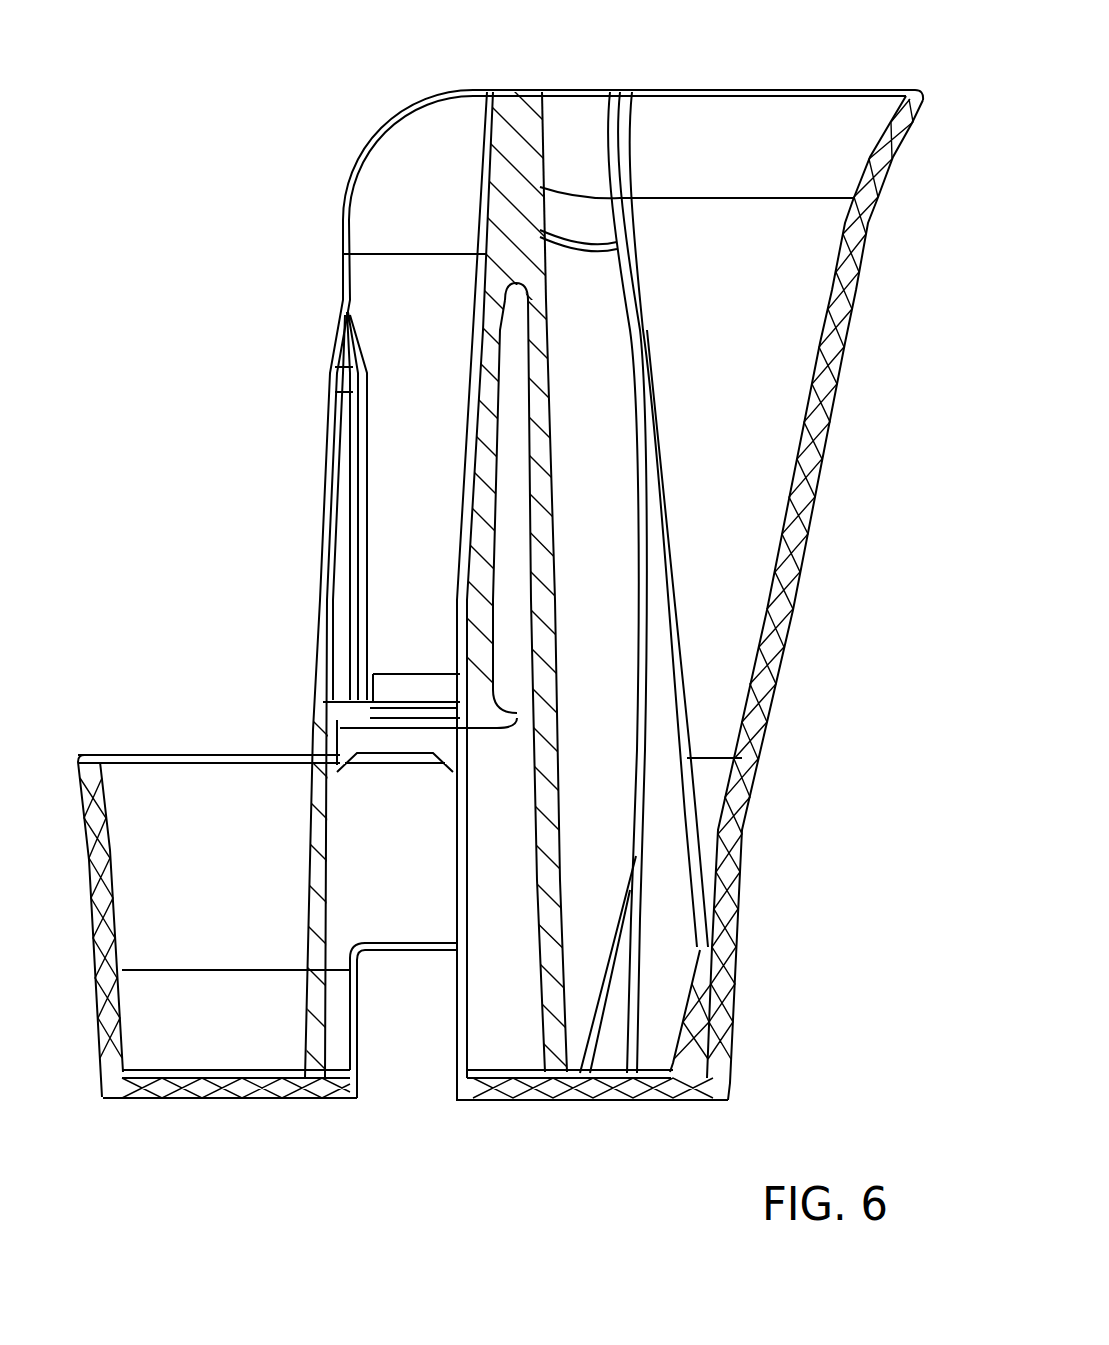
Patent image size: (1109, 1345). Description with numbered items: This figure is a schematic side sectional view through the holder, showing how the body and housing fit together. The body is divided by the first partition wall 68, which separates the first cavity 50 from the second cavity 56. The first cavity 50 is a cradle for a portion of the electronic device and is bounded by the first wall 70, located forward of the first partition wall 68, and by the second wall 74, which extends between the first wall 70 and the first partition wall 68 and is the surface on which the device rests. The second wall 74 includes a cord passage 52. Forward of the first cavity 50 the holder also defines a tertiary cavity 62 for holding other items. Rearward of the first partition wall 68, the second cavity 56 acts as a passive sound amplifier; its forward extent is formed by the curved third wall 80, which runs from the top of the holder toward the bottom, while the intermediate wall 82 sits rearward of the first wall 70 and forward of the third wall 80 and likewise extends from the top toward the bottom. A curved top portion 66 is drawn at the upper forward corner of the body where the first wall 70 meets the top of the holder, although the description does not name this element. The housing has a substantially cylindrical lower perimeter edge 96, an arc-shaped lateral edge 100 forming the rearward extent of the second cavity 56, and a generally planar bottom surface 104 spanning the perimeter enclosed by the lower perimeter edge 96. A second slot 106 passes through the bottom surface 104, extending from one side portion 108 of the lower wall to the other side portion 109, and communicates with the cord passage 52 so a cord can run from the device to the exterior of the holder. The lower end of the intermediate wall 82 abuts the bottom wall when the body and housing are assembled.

The first cavity 50 is at (420, 293).
The cord passage 52 is at (417, 697).
The second cavity 56 is at (705, 247).
The tertiary cavity 62 is at (225, 812).
The curved top wall 66 is at (400, 113).
The first partition wall 68 is at (487, 472).
The first wall 70 is at (322, 878).
The second wall 74 is at (427, 675).
The third wall 80 is at (680, 740).
The intermediate wall 82 is at (545, 820).
The lower perimeter edge 96 is at (282, 797).
The lateral edge 100 is at (804, 487).
The generally planar bottom surface 104 is at (180, 1090).
The second slot 106 is at (416, 950).
The side portion of the lower wall 108 is at (458, 1027).
The side portion of the lower wall 109 is at (357, 1053).